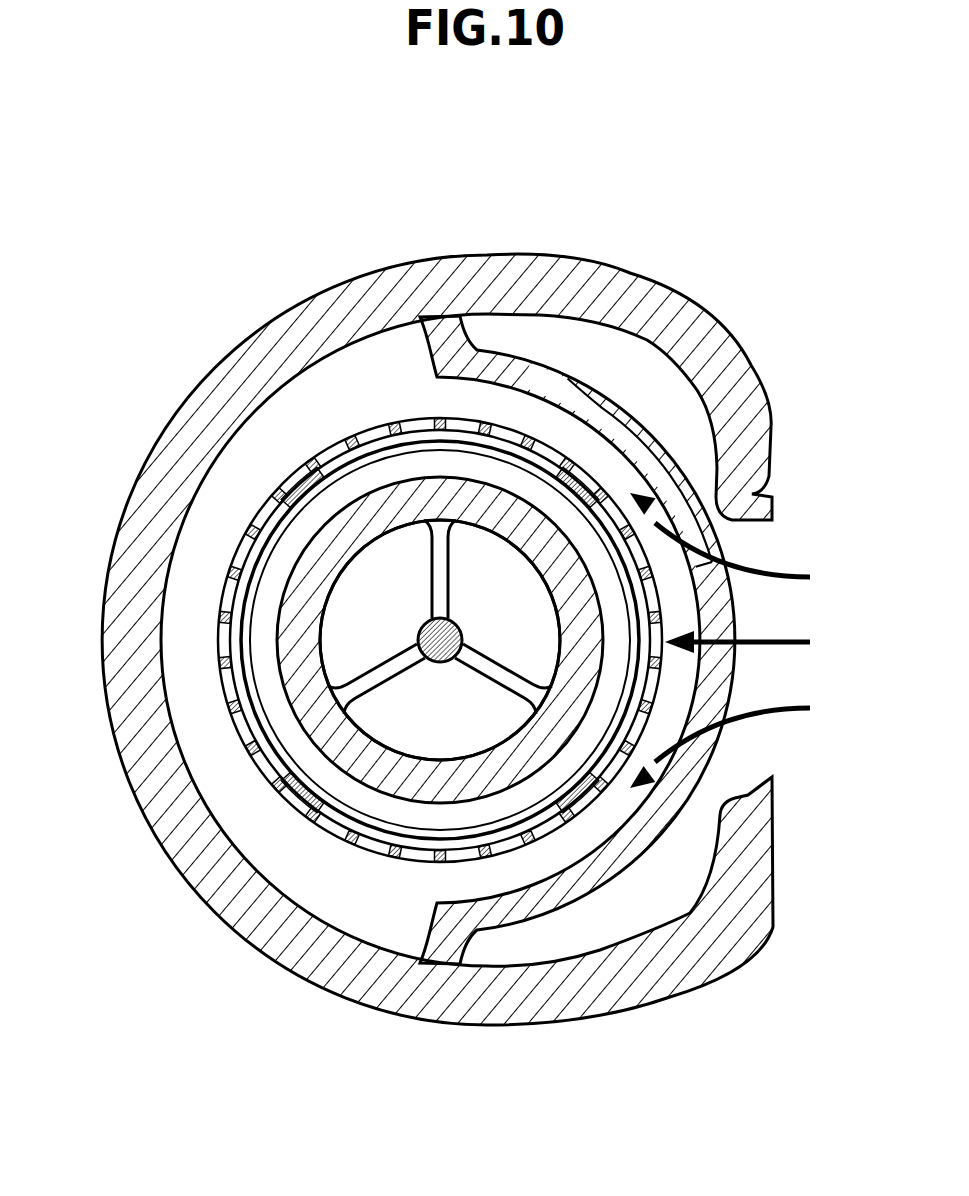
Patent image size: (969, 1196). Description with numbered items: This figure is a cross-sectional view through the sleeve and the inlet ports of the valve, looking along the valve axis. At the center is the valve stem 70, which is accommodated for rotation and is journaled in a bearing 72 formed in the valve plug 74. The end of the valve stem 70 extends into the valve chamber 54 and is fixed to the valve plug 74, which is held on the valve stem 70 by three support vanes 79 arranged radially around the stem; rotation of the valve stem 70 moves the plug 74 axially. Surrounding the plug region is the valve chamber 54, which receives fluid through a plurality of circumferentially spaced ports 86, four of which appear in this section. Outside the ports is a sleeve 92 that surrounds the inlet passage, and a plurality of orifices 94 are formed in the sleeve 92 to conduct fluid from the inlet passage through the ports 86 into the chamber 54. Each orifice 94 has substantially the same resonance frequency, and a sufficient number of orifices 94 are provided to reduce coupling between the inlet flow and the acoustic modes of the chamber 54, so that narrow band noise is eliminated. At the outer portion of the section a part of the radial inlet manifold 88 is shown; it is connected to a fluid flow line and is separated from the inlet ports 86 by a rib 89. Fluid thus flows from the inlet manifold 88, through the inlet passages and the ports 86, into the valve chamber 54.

The valve chamber 54 is at (280, 563).
The valve stem 70 is at (385, 755).
The bearing 72 is at (447, 655).
The valve plug 74 is at (318, 727).
The support vanes 79 is at (440, 525).
The ports 86 is at (430, 655).
The inlet manifold 88 is at (747, 747).
The rib 89 is at (717, 548).
The sleeve 92 is at (352, 437).
The orifices 94 is at (290, 477).